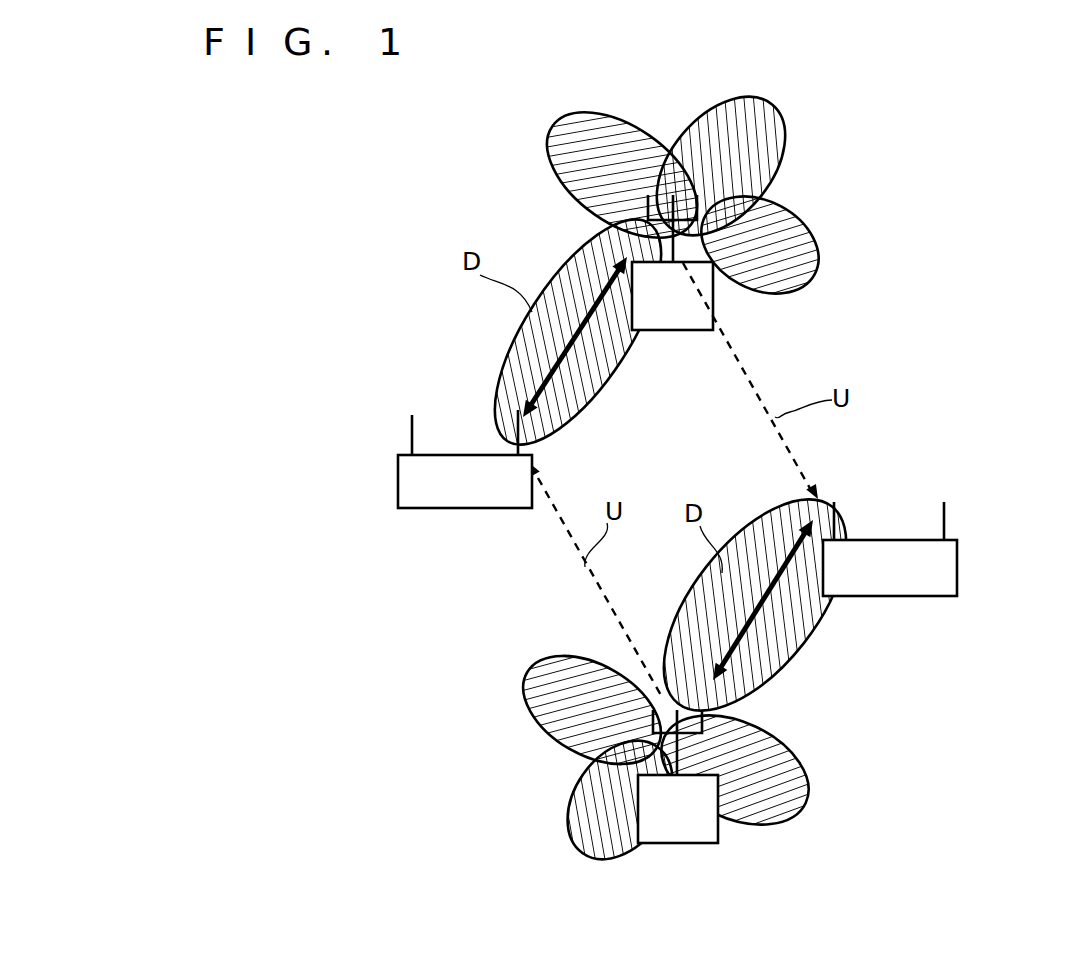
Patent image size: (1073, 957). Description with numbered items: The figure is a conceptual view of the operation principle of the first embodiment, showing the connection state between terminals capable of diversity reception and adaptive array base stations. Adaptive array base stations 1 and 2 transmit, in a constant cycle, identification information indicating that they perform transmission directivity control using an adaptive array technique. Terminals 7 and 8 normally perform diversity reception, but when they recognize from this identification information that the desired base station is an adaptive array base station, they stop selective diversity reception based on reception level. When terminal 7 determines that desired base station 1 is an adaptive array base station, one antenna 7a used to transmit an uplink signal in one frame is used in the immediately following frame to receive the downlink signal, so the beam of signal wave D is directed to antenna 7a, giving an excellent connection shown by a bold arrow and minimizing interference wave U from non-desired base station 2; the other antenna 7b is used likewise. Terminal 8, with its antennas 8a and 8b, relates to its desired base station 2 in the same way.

The adaptive array base station 1 is at (715, 297).
The adaptive array base station 2 is at (705, 843).
The terminal 7 is at (462, 508).
The antenna 7a is at (540, 433).
The antenna 7b is at (408, 423).
The terminal 8 is at (957, 570).
The antenna 8a is at (847, 523).
The antenna 8b is at (950, 508).